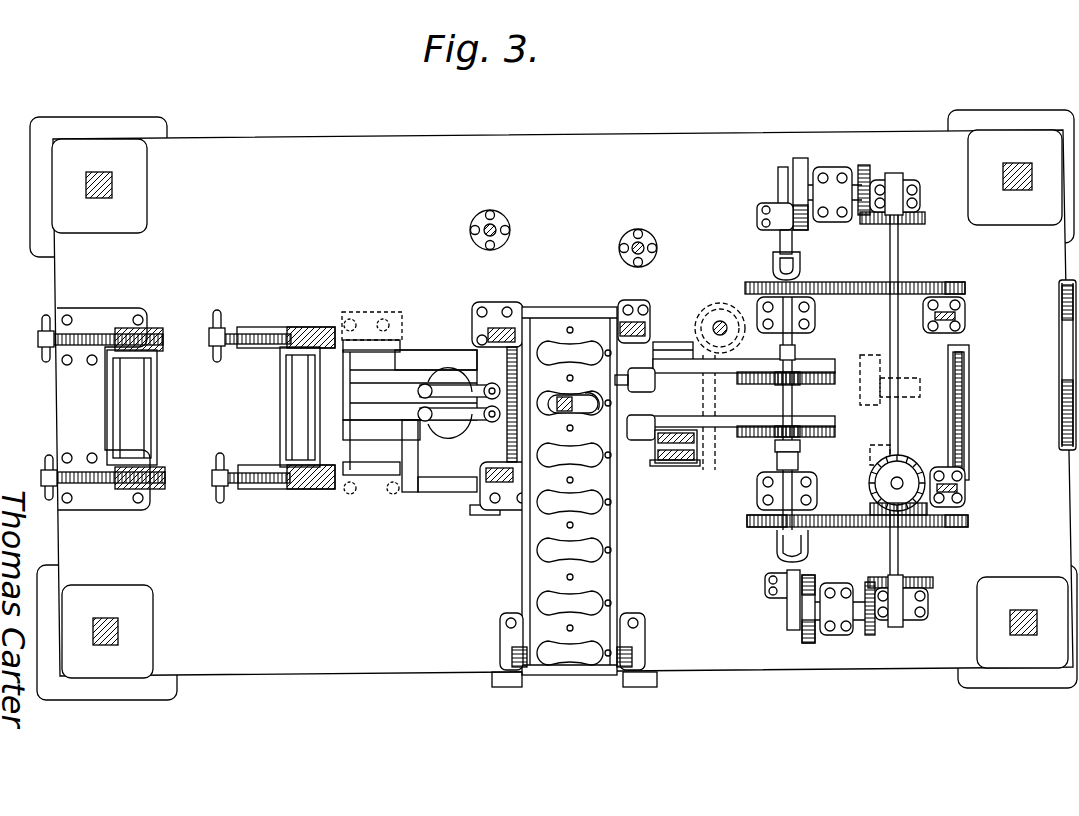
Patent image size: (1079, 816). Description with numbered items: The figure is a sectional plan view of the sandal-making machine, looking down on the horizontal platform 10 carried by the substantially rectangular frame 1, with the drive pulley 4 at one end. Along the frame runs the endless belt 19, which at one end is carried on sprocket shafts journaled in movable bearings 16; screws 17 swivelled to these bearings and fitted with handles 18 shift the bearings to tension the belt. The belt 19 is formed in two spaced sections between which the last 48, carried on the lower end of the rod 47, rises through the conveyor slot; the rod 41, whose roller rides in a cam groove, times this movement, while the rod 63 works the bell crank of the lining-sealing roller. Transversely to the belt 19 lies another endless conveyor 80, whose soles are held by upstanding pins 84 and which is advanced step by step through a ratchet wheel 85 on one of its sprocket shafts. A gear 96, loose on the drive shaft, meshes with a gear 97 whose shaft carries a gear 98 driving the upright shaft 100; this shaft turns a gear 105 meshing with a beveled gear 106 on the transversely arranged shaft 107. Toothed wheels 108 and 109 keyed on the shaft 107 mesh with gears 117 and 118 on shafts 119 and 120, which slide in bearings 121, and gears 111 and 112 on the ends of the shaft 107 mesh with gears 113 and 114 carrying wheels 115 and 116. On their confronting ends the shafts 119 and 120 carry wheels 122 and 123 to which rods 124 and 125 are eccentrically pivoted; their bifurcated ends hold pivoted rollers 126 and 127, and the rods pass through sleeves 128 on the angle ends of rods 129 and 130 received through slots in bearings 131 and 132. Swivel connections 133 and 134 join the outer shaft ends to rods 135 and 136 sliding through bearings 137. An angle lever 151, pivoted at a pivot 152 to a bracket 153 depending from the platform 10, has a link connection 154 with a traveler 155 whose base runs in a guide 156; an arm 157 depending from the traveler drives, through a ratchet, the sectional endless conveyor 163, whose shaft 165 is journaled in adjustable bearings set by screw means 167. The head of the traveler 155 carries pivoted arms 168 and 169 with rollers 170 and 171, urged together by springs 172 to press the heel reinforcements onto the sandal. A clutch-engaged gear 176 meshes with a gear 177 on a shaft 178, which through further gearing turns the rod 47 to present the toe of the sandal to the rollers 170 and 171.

The frame 1 is at (112, 187).
The drive pulley 4 is at (1058, 362).
The horizontal platform 10 is at (277, 158).
The movable bearings 16 is at (126, 507).
The screws 17 is at (97, 340).
The handles 18 is at (45, 365).
The endless belt 19 is at (107, 415).
The rod 41 is at (641, 245).
The rod 47 is at (565, 403).
The last 48 is at (580, 413).
The rod 63 is at (493, 226).
The endless conveyor 80 is at (618, 565).
The upstanding pins 84 is at (608, 507).
The ratchet wheel 85 is at (513, 672).
The gear 96 is at (871, 357).
The gear 97 is at (905, 390).
The gear 98 is at (900, 450).
The upright shaft 100 is at (870, 484).
The gear 105 is at (873, 468).
The beveled gear 106 is at (870, 508).
The transversely arranged shaft 107 is at (895, 530).
The toothed wheel 108 is at (968, 284).
The toothed wheel 109 is at (955, 528).
The gear 111 is at (915, 222).
The gear 112 is at (935, 582).
The gear 113 is at (873, 178).
The gear 114 is at (877, 620).
The wheel 115 is at (802, 158).
The wheel 116 is at (808, 644).
The gear 117 is at (835, 282).
The gear 118 is at (818, 530).
The shaft 119 is at (796, 352).
The shaft 120 is at (783, 463).
The bearings 121 is at (817, 316).
The wheel 122 is at (802, 372).
The wheel 123 is at (838, 430).
The rod 124 is at (777, 390).
The rod 125 is at (805, 425).
The pivoted roller 126 is at (642, 385).
The pivoted roller 127 is at (632, 425).
The sleeves 128 is at (622, 374).
The rod 129 is at (648, 330).
The rod 130 is at (703, 470).
The bearing 131 is at (682, 340).
The bearing 132 is at (665, 465).
The swivel connection 133 is at (773, 262).
The swivel connection 134 is at (777, 546).
The rod 135 is at (778, 192).
The rod 136 is at (787, 613).
The bearings 137 is at (757, 219).
The angle rod or lever 151 is at (350, 358).
The pivot 152 is at (380, 340).
The bracket 153 is at (370, 312).
The link connection 154 is at (385, 420).
The traveler 155 is at (408, 373).
The guide 156 is at (447, 333).
The arm 157 is at (440, 493).
The sectional endless conveyor 163 is at (282, 424).
The shaft 165 is at (300, 490).
The screw means 167 is at (255, 345).
The arm 168 is at (442, 385).
The arm 169 is at (480, 512).
The roller 170 is at (492, 383).
The roller 171 is at (492, 422).
The springs 172 is at (447, 426).
The gear 176 is at (720, 321).
The gear 177 is at (778, 481).
The shaft 178 is at (777, 453).